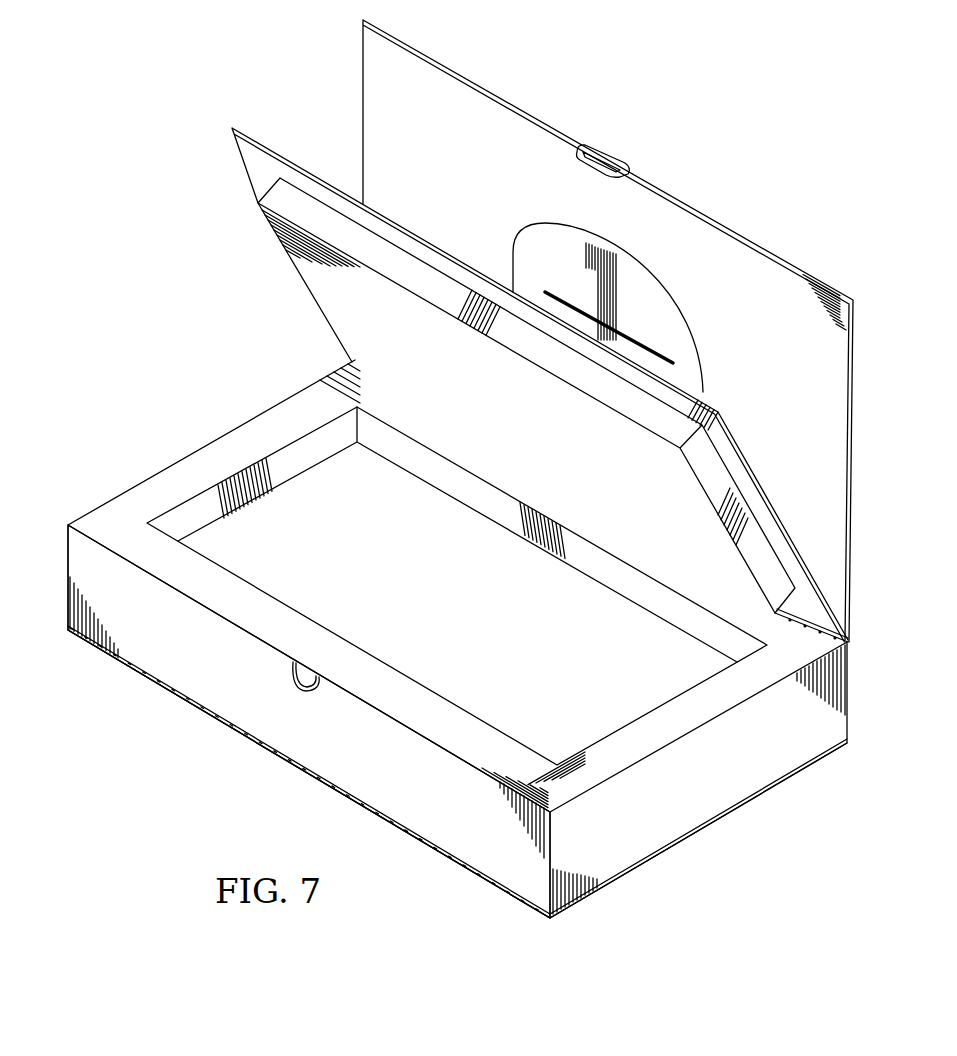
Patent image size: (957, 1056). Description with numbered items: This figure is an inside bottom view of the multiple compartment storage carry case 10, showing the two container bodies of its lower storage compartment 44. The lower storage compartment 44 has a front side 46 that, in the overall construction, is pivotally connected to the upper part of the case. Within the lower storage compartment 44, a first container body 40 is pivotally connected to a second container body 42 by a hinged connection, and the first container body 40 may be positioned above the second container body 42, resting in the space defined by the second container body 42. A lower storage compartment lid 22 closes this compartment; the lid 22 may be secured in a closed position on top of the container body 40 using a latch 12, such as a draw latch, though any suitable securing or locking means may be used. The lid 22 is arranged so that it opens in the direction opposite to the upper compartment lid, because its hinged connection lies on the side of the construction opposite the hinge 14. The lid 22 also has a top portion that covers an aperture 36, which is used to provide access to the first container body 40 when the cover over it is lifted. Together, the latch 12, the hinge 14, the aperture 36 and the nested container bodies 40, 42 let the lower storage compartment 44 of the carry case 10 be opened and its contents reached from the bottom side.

The multiple compartment storage carry case 10 is at (181, 738).
The latch 12 is at (312, 692).
The hinge 14 is at (478, 877).
The lower storage compartment lid 22 is at (744, 250).
The aperture 36 is at (627, 340).
The first container body 40 is at (724, 479).
The second container body 42 is at (647, 707).
The lower storage compartment 44 is at (222, 446).
The front side 46 is at (167, 638).